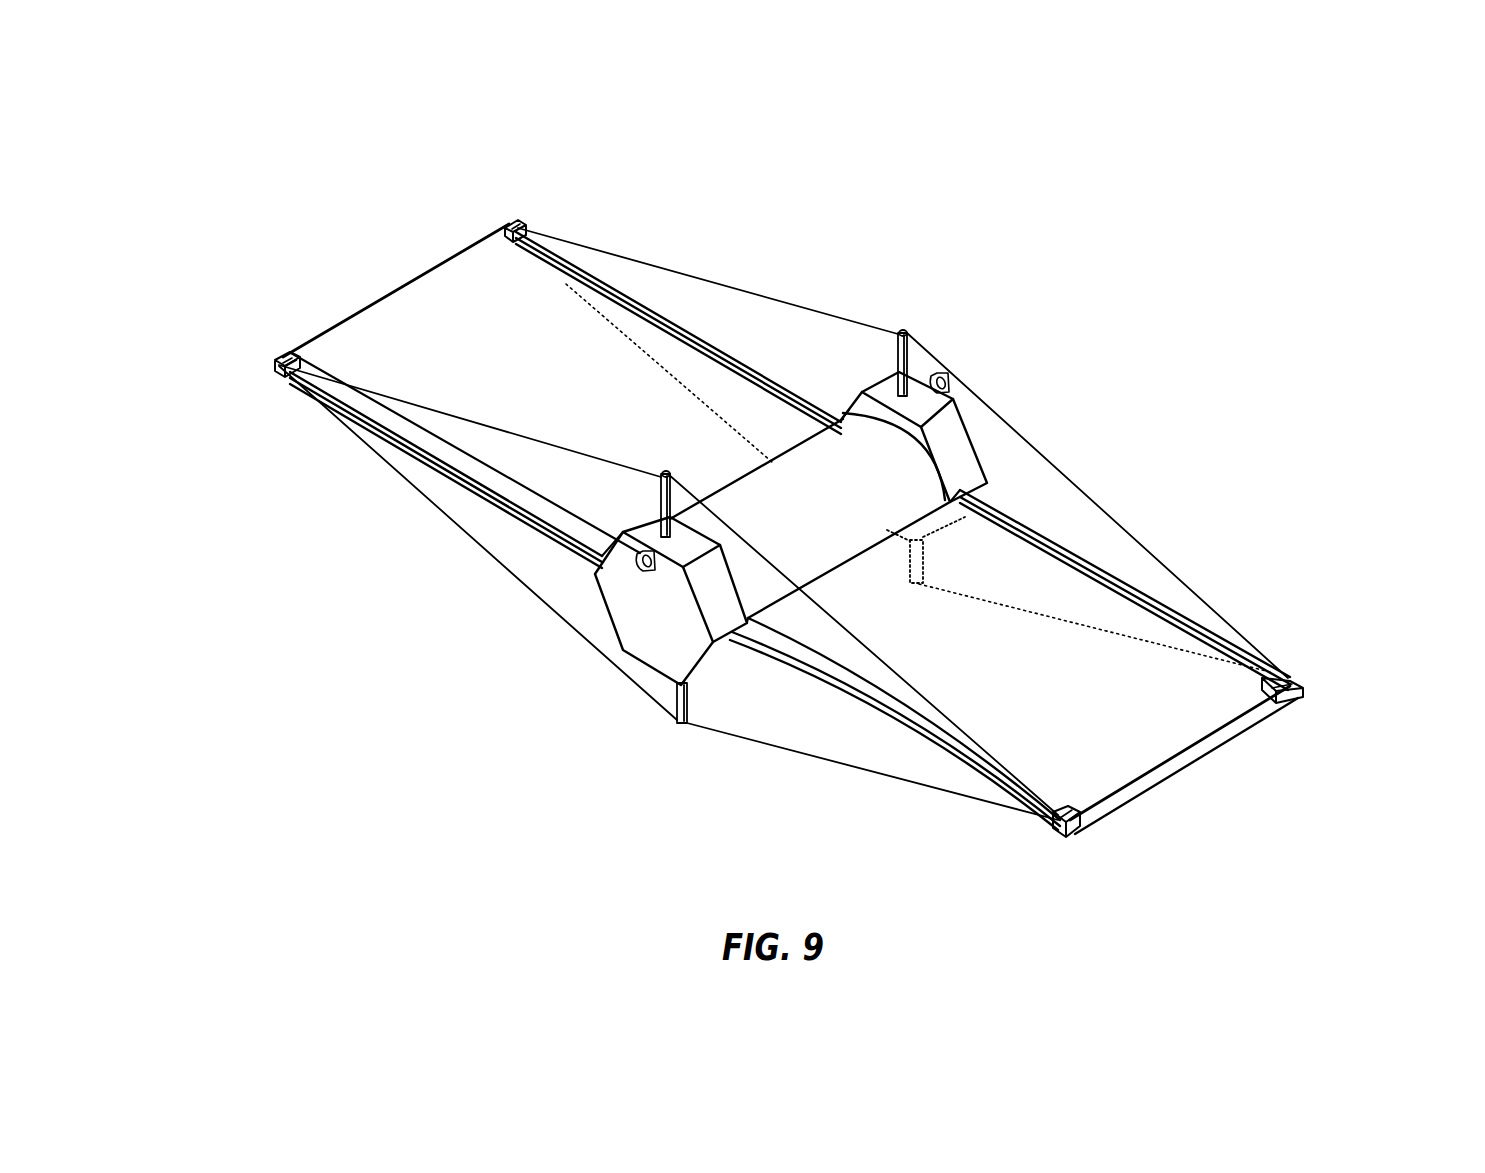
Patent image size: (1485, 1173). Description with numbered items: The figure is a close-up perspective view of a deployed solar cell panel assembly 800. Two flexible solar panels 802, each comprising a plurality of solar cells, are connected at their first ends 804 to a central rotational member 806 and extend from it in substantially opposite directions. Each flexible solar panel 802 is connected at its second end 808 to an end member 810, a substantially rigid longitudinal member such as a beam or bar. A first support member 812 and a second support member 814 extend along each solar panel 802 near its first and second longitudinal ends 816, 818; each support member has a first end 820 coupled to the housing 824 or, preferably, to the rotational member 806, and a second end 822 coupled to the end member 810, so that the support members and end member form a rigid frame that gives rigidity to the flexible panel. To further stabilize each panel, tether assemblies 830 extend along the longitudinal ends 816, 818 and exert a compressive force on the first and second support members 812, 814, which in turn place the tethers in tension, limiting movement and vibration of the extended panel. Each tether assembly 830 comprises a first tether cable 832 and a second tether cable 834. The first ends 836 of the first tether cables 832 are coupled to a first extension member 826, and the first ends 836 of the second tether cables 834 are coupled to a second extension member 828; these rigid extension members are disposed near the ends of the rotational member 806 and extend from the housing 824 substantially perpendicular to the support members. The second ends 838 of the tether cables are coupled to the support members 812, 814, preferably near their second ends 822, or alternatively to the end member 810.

The solar cell panel assembly 800 is at (1132, 311).
The flexible solar panel 802 is at (340, 345).
The first end 804 is at (570, 487).
The rotational member 806 is at (810, 515).
The second end 808 is at (470, 275).
The end member 810 is at (405, 286).
The first support member 812 is at (375, 424).
The second support member 814 is at (605, 268).
The first longitudinal end 816 is at (437, 440).
The second longitudinal end 818 is at (720, 290).
The first end 820 is at (552, 533).
The second end 822 is at (520, 220).
The housing 824 is at (647, 620).
The first extension member 826 is at (660, 513).
The second extension member 828 is at (677, 698).
The tether assembly 830 is at (497, 568).
The first tether cable 832 is at (415, 400).
The second tether cable 834 is at (445, 505).
The first end 836 is at (587, 450).
The second end 838 is at (298, 374).